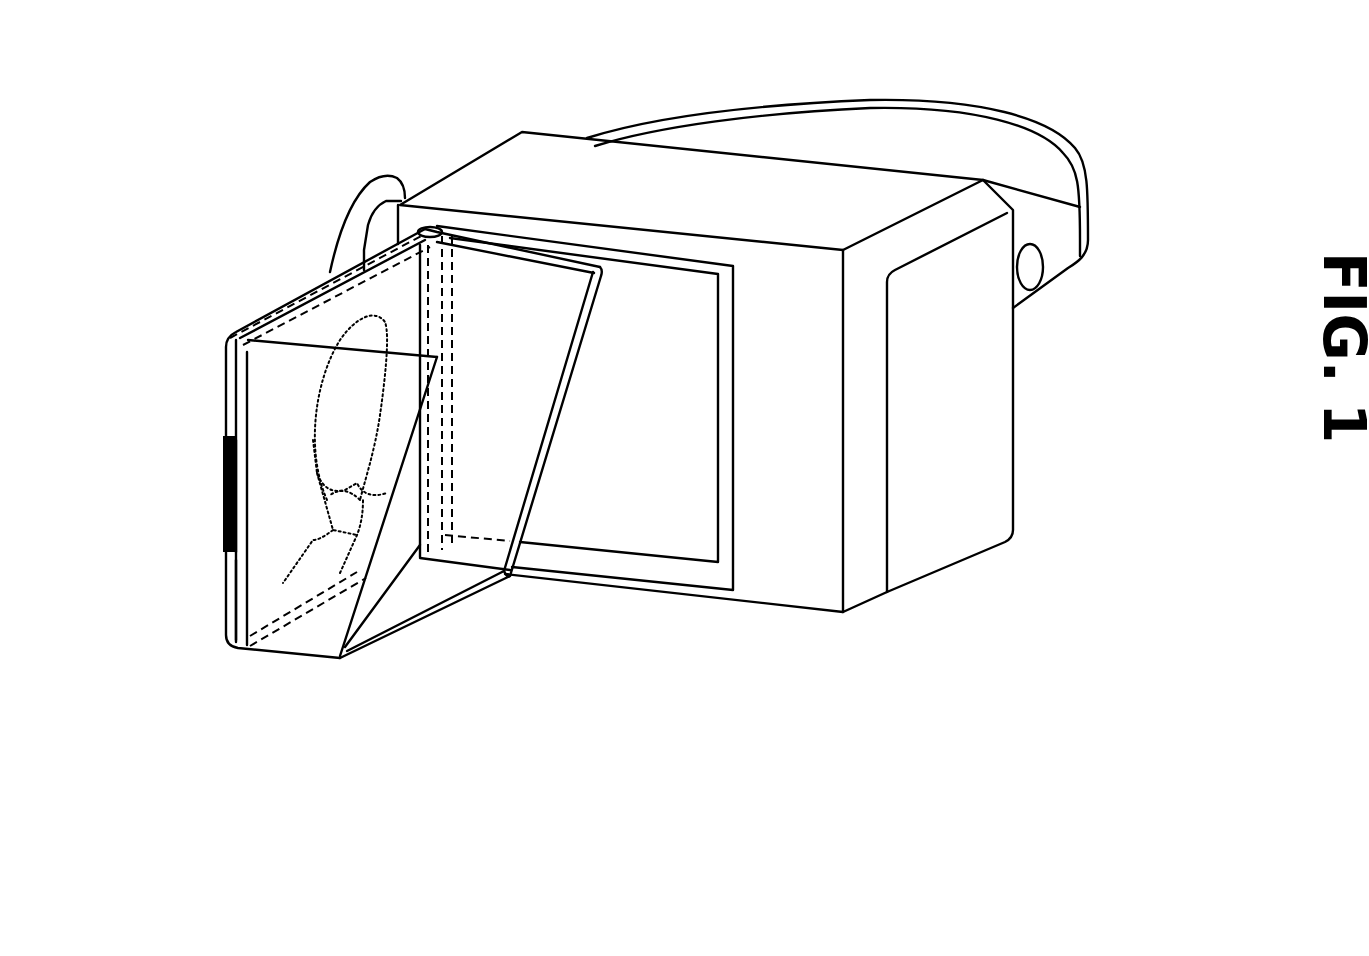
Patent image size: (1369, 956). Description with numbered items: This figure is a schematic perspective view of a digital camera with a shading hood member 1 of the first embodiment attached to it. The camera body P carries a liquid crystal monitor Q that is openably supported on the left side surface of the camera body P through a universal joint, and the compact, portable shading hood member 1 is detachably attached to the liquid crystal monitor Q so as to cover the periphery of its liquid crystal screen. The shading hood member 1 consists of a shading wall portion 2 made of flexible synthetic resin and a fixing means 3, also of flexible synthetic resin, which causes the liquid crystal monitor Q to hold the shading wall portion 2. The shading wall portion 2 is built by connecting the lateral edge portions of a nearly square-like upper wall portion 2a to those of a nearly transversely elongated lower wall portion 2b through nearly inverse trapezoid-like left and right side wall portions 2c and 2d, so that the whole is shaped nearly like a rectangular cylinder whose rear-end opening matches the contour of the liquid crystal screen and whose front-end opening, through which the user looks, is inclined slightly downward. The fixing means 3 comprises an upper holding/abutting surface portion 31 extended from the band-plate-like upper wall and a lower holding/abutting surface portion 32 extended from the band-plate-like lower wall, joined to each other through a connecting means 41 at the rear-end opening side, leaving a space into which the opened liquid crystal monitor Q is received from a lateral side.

The shading hood member 1 is at (203, 308).
The shading wall portion 2 is at (405, 630).
The upper wall portion 2a is at (512, 275).
The lower wall portion 2b is at (445, 588).
The left side wall portion 2c is at (517, 438).
The right side wall portion 2d is at (332, 628).
The fixing means 3 is at (142, 472).
The upper holding/abutting surface portion 31 is at (227, 508).
The lower holding/abutting surface portion 32 is at (230, 598).
The connecting means 41 is at (227, 447).
The camera body P is at (758, 185).
The liquid crystal monitor Q is at (315, 332).